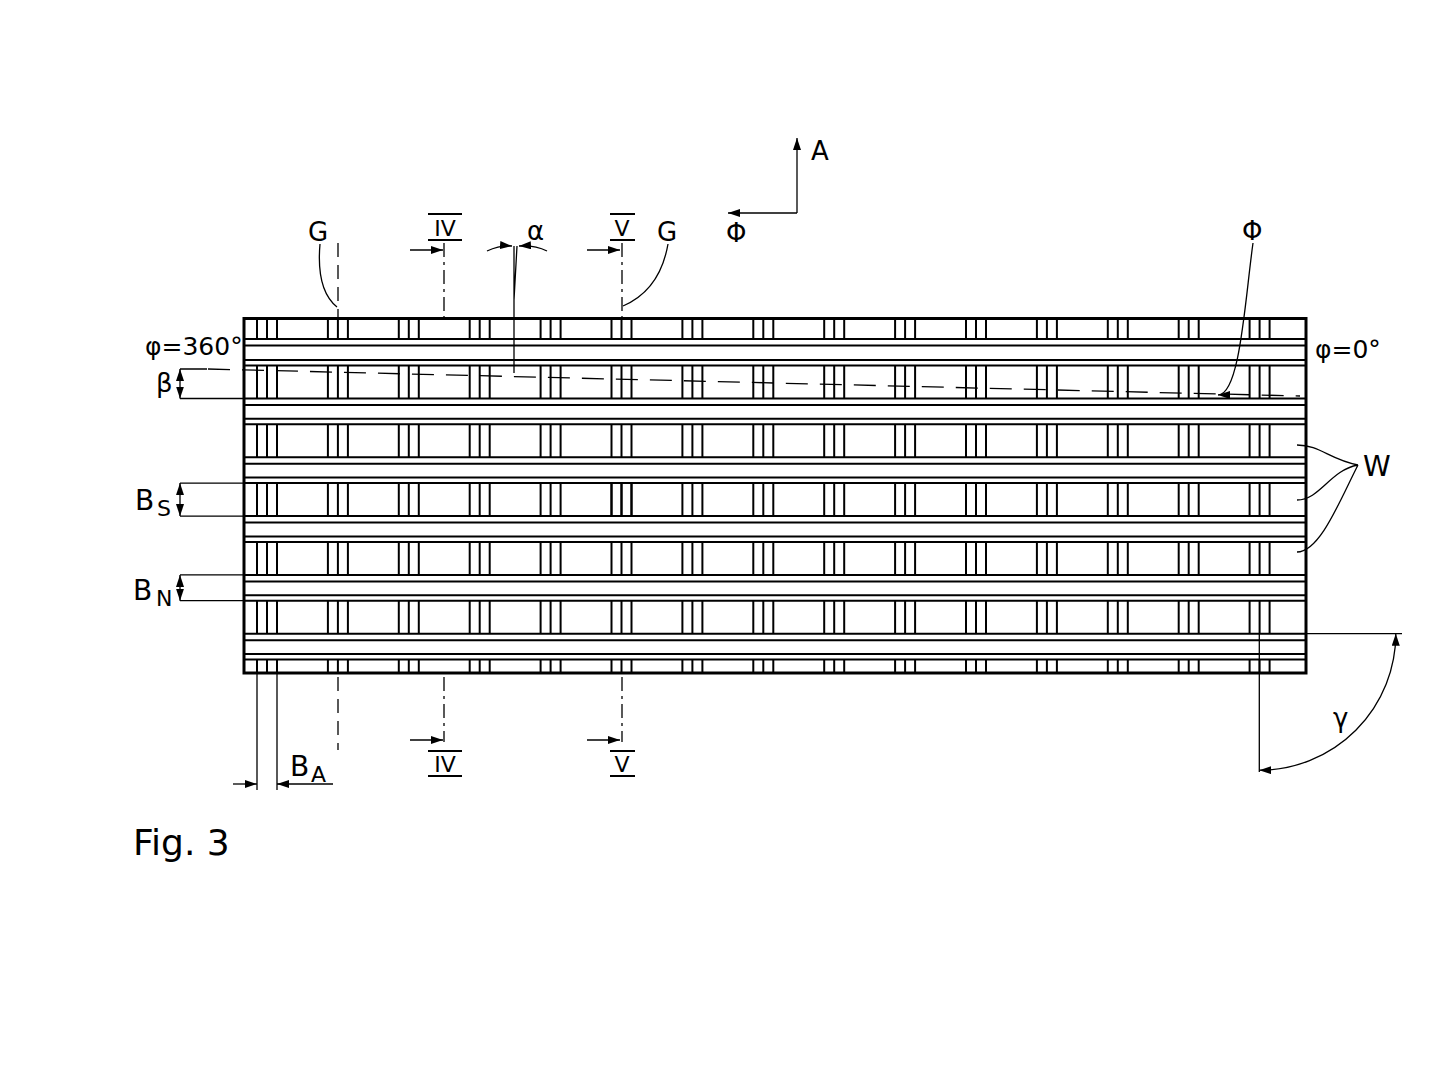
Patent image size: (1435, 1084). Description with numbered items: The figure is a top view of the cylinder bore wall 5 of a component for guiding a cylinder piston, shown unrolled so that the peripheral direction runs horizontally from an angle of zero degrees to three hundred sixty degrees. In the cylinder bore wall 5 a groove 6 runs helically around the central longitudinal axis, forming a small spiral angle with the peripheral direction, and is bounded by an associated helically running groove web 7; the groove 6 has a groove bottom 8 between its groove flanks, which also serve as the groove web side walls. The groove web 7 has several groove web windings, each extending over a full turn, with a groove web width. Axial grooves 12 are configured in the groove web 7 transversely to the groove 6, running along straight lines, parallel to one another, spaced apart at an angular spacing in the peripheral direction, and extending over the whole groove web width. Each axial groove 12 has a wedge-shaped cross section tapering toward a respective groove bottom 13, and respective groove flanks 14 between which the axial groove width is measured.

The cylinder bore wall 5 is at (1145, 328).
The groove 6 is at (1064, 412).
The groove web 7 is at (950, 436).
The groove bottom 8 is at (1015, 412).
The axial grooves 12 is at (828, 677).
The groove bottom 13 is at (617, 503).
The groove flanks 14 is at (628, 505).